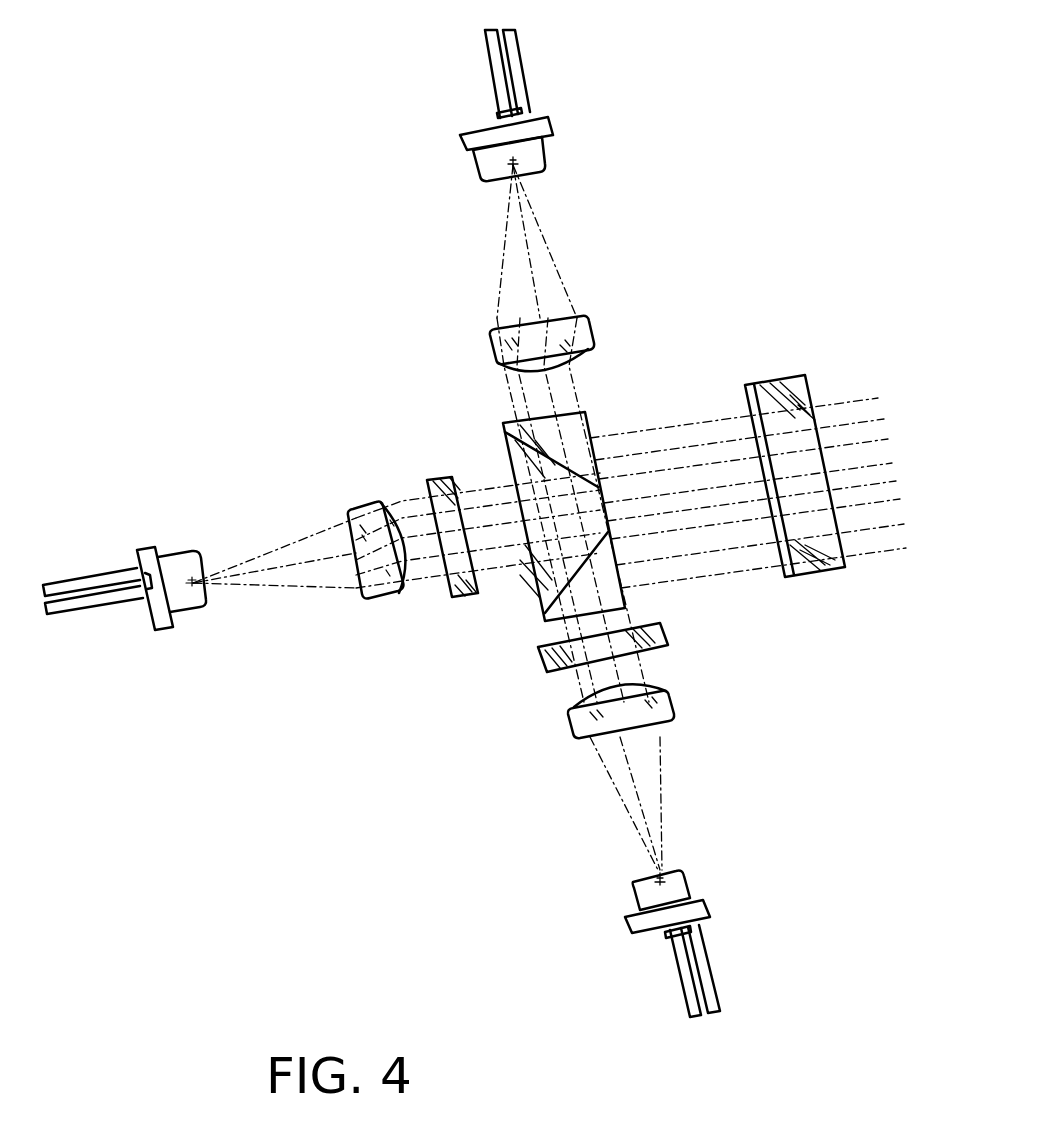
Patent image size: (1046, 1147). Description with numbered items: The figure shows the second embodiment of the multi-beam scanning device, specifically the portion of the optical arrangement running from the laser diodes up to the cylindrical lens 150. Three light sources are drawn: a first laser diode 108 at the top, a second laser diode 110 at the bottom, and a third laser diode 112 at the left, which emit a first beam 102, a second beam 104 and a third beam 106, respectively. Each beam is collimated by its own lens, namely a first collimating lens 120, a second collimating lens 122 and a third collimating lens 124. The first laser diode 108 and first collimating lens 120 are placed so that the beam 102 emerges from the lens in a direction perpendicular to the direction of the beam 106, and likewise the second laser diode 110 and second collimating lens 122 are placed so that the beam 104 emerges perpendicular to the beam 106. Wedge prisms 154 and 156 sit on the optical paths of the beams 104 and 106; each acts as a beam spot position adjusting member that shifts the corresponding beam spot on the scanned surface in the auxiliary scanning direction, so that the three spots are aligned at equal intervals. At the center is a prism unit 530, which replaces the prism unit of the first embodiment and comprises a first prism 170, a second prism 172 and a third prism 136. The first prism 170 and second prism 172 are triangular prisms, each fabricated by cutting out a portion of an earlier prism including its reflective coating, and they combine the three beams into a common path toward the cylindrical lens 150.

The first beam 102 is at (547, 236).
The second beam 104 is at (663, 782).
The third beam 106 is at (277, 548).
The first laser diode 108 is at (478, 134).
The second laser diode 110 is at (632, 926).
The third laser diode 112 is at (155, 622).
The first collimating lens 120 is at (492, 331).
The second collimating lens 122 is at (580, 725).
The third collimating lens 124 is at (378, 597).
The third prism 136 is at (589, 501).
The cylindrical lens 150 is at (780, 384).
The wedge prism 154 is at (655, 640).
The wedge prism 156 is at (436, 484).
The first prism 170 is at (588, 417).
The second prism 172 is at (612, 600).
The prism unit 530 is at (476, 648).